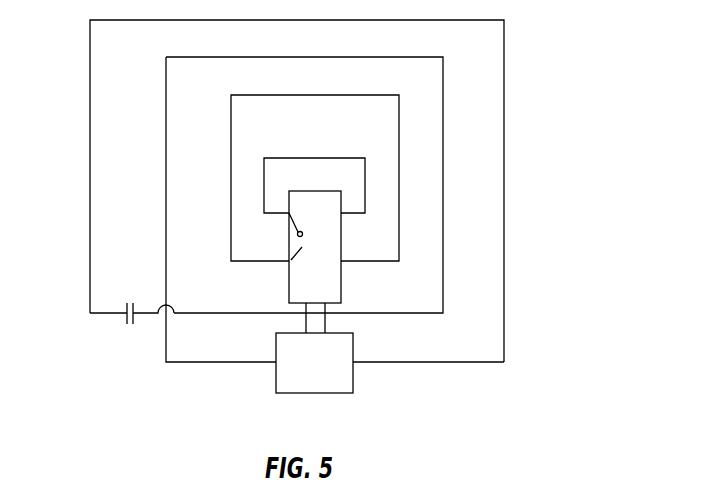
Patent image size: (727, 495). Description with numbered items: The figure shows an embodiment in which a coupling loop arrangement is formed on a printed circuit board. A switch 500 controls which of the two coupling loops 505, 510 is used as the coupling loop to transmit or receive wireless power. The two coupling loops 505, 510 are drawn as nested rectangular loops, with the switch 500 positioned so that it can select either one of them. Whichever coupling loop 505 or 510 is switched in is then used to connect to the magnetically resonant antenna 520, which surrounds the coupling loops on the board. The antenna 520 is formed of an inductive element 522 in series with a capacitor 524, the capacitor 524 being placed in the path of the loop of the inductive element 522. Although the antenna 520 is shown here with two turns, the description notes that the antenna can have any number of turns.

The switch 500 is at (342, 298).
The coupling loop 505 is at (318, 158).
The coupling loop 510 is at (231, 138).
The magnetically resonant antenna 520 is at (572, 287).
The inductive element 522 is at (88, 298).
The capacitor 524 is at (128, 300).